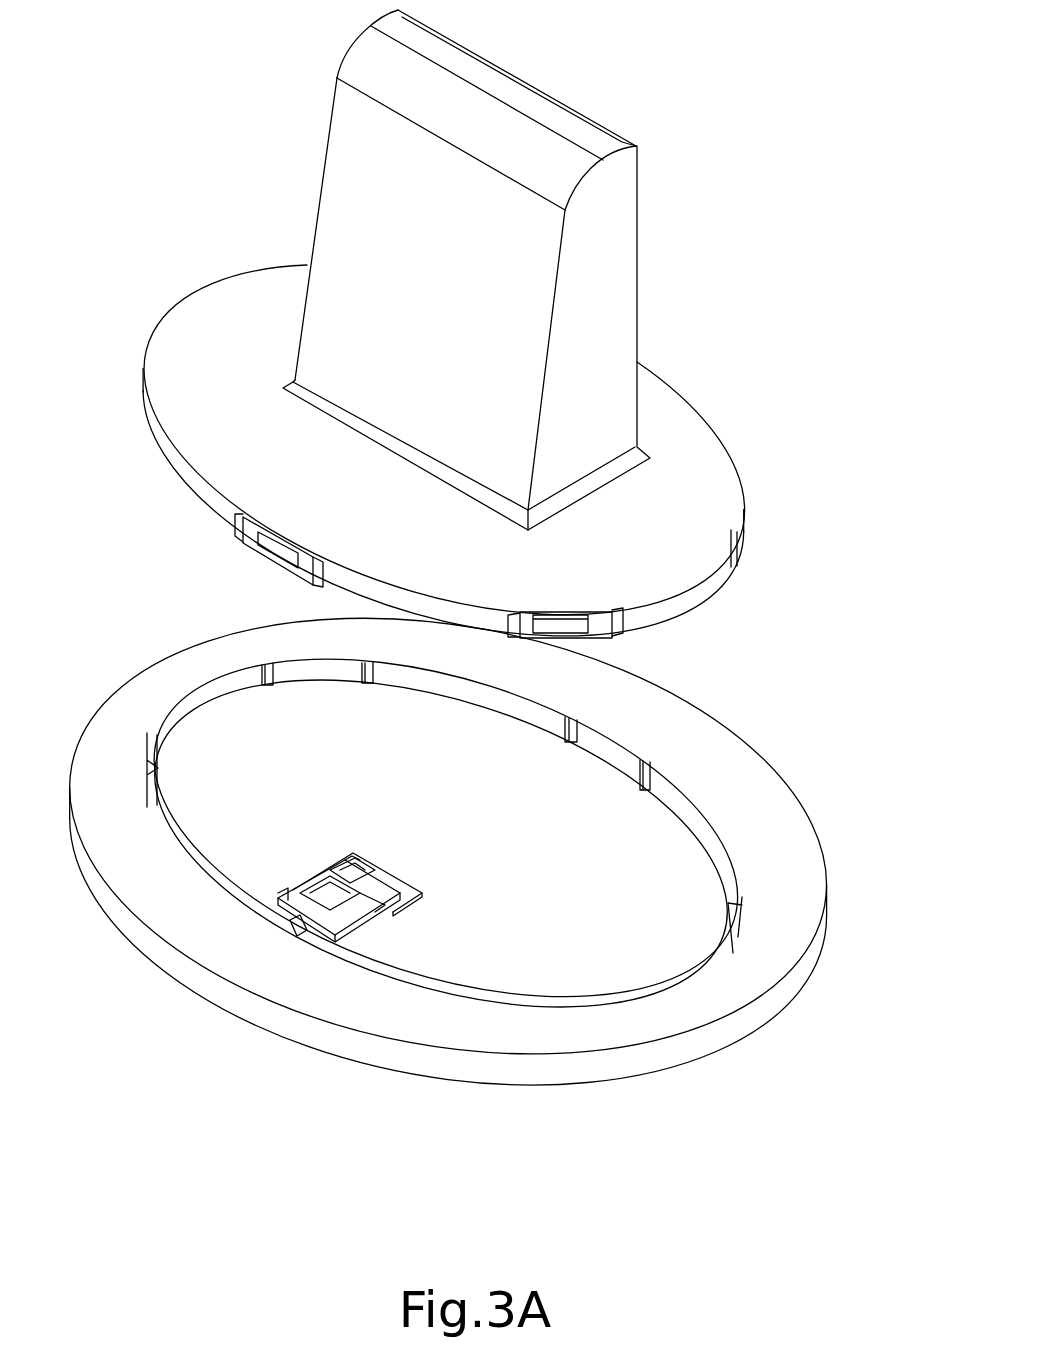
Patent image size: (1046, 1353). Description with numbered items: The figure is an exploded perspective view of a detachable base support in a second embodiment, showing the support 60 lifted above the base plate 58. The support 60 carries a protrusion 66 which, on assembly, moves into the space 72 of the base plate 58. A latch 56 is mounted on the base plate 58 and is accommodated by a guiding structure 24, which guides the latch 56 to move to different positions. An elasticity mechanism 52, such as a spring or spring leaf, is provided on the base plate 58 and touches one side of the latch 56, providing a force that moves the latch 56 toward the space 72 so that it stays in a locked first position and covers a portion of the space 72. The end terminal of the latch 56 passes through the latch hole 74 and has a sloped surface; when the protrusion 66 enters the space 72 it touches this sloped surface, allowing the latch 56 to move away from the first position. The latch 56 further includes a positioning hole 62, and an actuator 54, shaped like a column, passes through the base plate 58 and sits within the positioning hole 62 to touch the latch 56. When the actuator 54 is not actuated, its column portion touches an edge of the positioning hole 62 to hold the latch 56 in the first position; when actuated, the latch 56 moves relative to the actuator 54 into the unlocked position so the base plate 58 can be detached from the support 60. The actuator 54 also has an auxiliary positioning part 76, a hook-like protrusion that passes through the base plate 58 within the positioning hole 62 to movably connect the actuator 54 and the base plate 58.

The support 60 is at (605, 272).
The protrusion 66 is at (235, 532).
The latch hole 74 is at (280, 548).
The base plate 58 is at (447, 862).
The space 72 is at (375, 967).
The guiding structure 24 is at (340, 943).
The auxiliary positioning part 76 is at (370, 883).
The actuator 54 is at (307, 890).
The elasticity mechanism 52 is at (358, 863).
The latch 56 is at (367, 917).
The positioning hole 62 is at (297, 936).